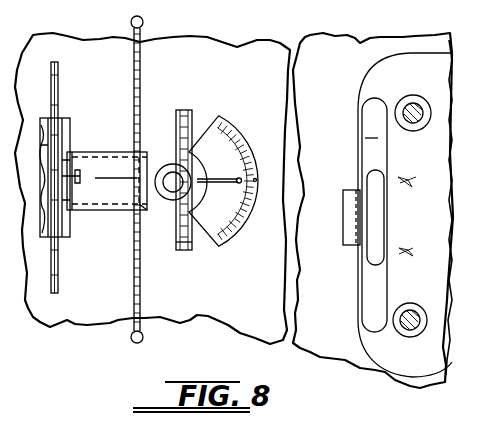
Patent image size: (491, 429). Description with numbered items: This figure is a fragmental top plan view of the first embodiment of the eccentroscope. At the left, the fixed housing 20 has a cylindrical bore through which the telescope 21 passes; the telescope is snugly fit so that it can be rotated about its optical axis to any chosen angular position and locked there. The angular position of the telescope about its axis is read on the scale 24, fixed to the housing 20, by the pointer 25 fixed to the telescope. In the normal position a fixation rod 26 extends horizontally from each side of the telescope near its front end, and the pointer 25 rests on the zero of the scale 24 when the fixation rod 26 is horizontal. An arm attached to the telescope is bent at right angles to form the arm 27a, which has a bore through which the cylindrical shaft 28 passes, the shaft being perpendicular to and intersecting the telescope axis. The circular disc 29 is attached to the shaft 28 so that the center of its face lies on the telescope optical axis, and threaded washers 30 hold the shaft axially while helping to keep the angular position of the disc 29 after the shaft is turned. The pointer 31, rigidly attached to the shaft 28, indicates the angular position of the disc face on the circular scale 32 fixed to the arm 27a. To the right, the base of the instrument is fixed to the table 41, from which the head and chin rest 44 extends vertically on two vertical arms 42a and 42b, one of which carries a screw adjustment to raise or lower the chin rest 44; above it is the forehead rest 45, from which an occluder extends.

The fixed housing 20 is at (68, 127).
The telescope 21 is at (107, 151).
The scale 24 is at (61, 73).
The pointer 25 is at (80, 150).
The fixation rod 26 is at (144, 26).
The arm 27a is at (167, 202).
The cylindrical shaft 28 is at (167, 153).
The circular disc 29 is at (185, 108).
The threaded washers 30 is at (140, 205).
The pointer 31 is at (219, 165).
The circular scale 32 is at (245, 137).
The table 41 is at (255, 295).
The vertical arm 42a is at (413, 337).
The vertical arm 42b is at (414, 95).
The head and chin rest 44 is at (345, 241).
The forehead rest 45 is at (360, 158).